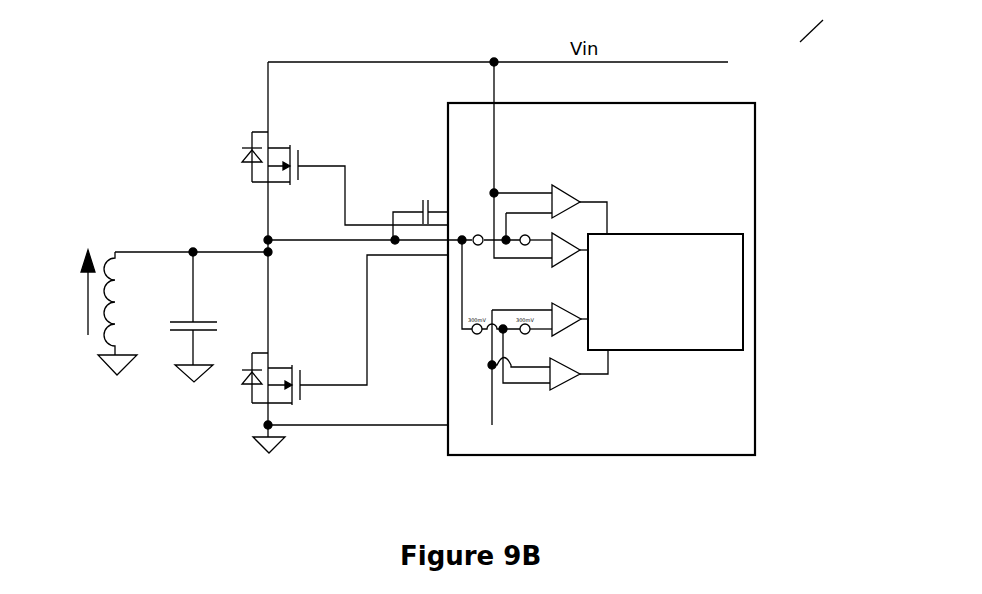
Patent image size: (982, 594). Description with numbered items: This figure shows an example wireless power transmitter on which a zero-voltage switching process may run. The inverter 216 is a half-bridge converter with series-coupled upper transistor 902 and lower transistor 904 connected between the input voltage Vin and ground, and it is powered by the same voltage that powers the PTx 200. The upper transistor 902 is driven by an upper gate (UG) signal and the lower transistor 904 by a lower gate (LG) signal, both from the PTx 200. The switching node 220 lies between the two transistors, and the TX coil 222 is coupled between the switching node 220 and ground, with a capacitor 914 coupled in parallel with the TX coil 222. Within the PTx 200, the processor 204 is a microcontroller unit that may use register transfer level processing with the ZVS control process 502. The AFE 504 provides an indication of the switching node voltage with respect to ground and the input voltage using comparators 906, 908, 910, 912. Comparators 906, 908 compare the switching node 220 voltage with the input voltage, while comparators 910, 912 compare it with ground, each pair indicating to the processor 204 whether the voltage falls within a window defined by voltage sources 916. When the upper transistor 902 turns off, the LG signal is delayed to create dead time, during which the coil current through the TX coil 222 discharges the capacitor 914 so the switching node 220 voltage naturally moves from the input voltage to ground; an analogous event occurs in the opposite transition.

The PTx 200 is at (601, 279).
The processor 204 is at (698, 233).
The inverter 216 is at (220, 158).
The switching node 220 is at (190, 251).
The TX coil 222 is at (103, 237).
The ZVS control process 502 is at (718, 310).
The AFE 504 is at (562, 182).
The upper transistor 902 is at (302, 162).
The lower transistor 904 is at (290, 367).
The comparator 906 is at (563, 213).
The comparator 908 is at (548, 243).
The comparator 910 is at (568, 332).
The comparator 912 is at (548, 368).
The capacitor 914 is at (172, 320).
The voltage sources 916 is at (527, 235).